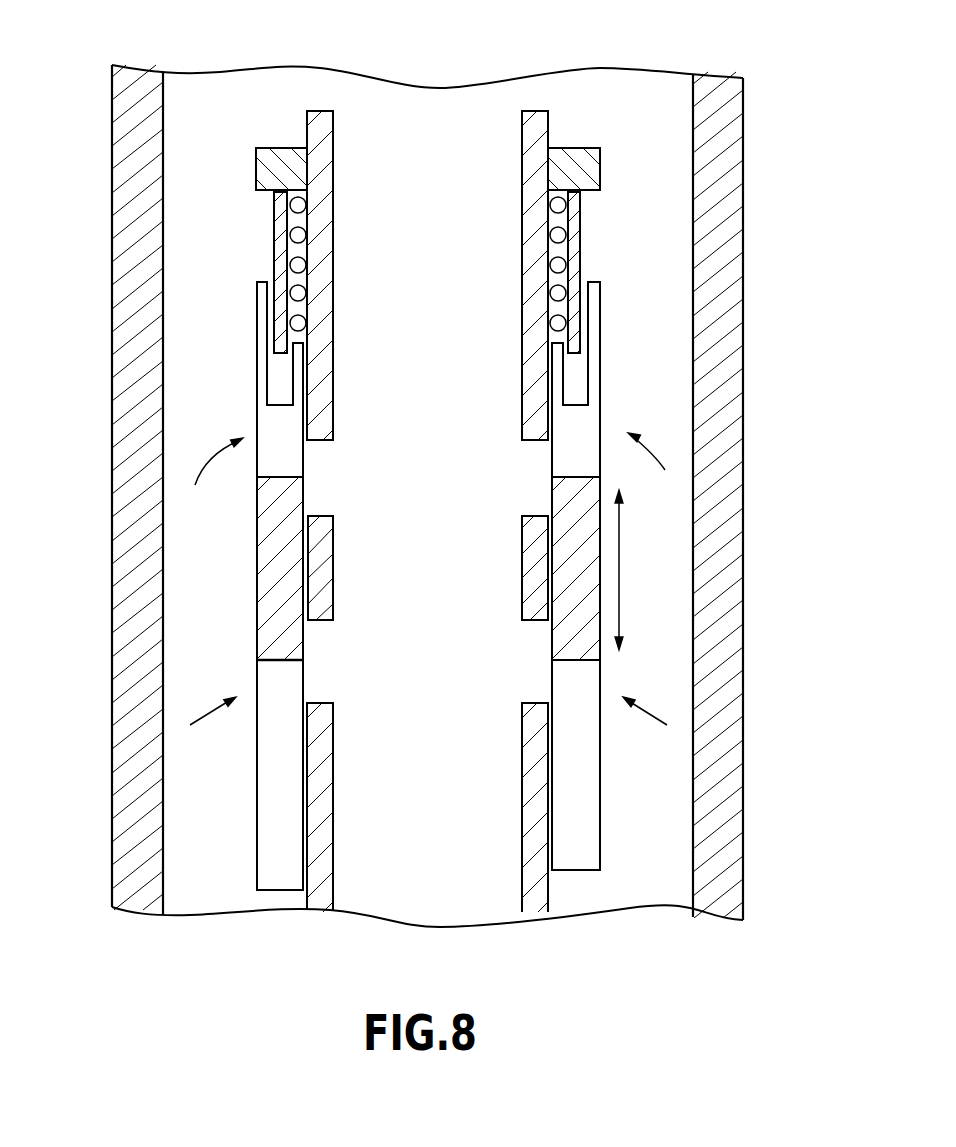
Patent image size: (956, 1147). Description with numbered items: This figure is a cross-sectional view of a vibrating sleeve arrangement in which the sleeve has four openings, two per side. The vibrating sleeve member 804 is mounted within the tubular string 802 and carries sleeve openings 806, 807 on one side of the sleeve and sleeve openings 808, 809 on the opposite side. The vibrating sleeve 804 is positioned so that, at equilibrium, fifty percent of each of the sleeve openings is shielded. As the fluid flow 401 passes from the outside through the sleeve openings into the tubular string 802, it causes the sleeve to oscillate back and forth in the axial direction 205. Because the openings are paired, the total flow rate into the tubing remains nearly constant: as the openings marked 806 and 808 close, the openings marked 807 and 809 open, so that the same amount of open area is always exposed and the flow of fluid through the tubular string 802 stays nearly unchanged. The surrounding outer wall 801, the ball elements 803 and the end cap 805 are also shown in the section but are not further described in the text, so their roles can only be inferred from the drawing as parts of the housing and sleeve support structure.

The axial direction 205 is at (621, 572).
The fluid flow 401 is at (200, 722).
The housing wall 801 is at (682, 252).
The tubular string 802 is at (548, 122).
The ball bearings 803 is at (553, 265).
The vibrating sleeve member 804 is at (257, 505).
The cap block 805 is at (275, 148).
The sleeve opening 806 is at (535, 458).
The sleeve opening 807 is at (535, 641).
The sleeve opening 808 is at (320, 482).
The sleeve opening 809 is at (322, 660).